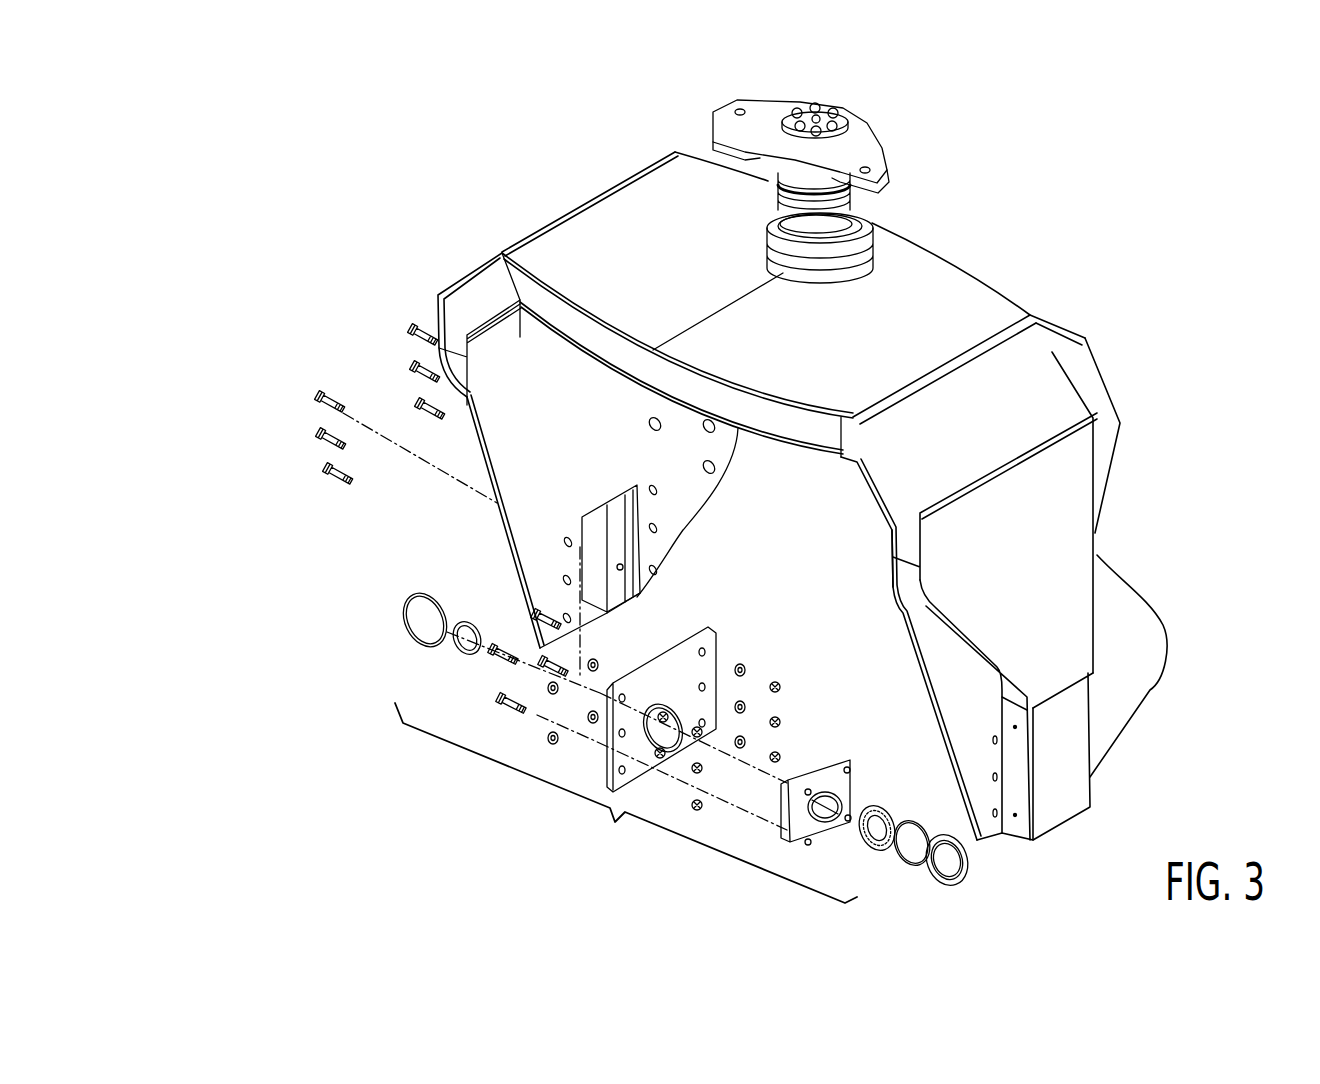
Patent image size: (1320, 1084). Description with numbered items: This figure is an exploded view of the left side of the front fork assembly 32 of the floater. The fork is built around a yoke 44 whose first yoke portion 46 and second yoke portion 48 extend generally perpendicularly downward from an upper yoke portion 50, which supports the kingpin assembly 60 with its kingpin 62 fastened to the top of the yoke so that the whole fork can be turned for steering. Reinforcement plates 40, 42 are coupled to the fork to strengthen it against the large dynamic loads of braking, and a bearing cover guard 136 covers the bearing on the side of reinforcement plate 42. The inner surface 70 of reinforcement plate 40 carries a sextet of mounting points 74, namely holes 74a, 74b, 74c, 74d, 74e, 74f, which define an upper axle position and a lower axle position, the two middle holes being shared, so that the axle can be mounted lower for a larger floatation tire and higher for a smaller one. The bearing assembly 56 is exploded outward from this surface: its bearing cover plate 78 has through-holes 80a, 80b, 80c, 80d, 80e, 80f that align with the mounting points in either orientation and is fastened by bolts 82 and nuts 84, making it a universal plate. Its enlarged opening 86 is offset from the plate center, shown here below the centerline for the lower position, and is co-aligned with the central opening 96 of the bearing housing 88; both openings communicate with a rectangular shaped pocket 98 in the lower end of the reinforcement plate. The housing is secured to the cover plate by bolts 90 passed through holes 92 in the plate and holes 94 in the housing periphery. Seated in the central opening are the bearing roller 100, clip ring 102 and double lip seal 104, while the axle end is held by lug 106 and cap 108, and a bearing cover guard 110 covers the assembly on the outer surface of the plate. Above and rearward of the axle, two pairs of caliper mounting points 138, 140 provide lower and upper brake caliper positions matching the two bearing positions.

The front fork assembly 32 is at (1114, 254).
The reinforcement plate 40 is at (714, 483).
The reinforcement plate 42 is at (1135, 679).
The yoke 44 is at (579, 154).
The first yoke portion 46 is at (468, 292).
The second yoke portion 48 is at (1100, 383).
The upper yoke portion 50 is at (945, 290).
The bearing assembly 56 is at (626, 803).
The kingpin assembly 60 is at (889, 222).
The kingpin 62 is at (835, 235).
The inner surface 70 is at (493, 412).
The mounting points 74 is at (523, 512).
The mounting point 74a is at (566, 542).
The mounting point 74b is at (654, 490).
The mounting point 74c is at (565, 580).
The mounting point 74d is at (663, 513).
The mounting point 74e is at (565, 618).
The mounting point 74f is at (655, 570).
The bearing cover plate 78 is at (693, 620).
The through-hole 80a is at (622, 696).
The through-hole 80b is at (703, 650).
The through-hole 80c is at (620, 734).
The through-hole 80d is at (704, 686).
The through-hole 80e is at (623, 772).
The through-hole 80f is at (704, 725).
The bolts 82 is at (408, 332).
The nuts 84 is at (780, 687).
The enlarged opening 86 is at (674, 713).
The bearing housing 88 is at (862, 775).
The bolts 90 is at (523, 650).
The holes 92 is at (659, 714).
The holes 94 is at (850, 770).
The central opening 96 is at (838, 797).
The rectangular shaped pocket 98 is at (606, 596).
The bearing roller 100 is at (883, 814).
The clip ring 102 is at (912, 858).
The double lip seal 104 is at (962, 871).
The lug 106 is at (462, 623).
The cap 108 is at (422, 601).
The bearing cover guard 110 is at (598, 516).
The bearing cover guard 136 is at (1090, 800).
The caliper mounting points 138 is at (737, 468).
The caliper mounting points 140 is at (643, 393).